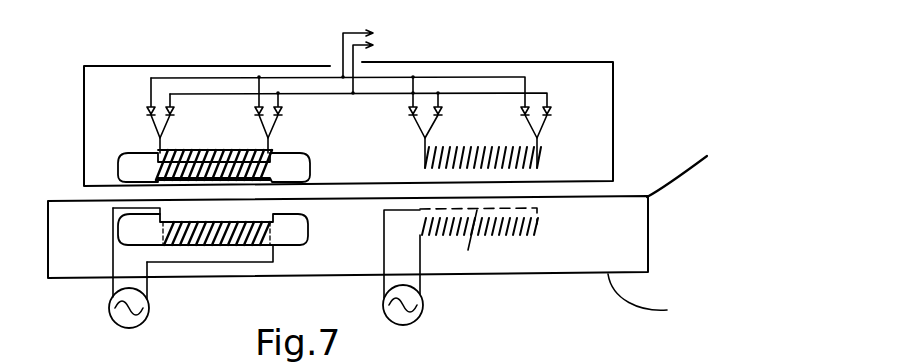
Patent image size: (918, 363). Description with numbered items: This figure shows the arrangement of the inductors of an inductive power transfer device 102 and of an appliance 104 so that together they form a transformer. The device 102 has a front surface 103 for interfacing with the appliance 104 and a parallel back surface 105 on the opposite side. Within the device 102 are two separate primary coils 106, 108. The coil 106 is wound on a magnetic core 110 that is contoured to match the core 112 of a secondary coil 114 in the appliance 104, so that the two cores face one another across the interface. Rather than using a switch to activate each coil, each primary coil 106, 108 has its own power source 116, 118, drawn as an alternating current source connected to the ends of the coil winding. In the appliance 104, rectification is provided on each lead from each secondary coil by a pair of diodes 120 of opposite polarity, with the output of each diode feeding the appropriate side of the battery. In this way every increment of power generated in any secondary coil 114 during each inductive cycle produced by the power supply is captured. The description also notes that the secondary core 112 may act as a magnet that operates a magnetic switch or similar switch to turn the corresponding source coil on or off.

The inductive power transfer device 102 is at (643, 232).
The front surface 103 is at (704, 170).
The appliance 104 is at (607, 123).
The back surface 105 is at (728, 298).
The primary coil 106 is at (268, 237).
The primary coil 108 is at (527, 233).
The magnetic core 110 is at (307, 228).
The core 112 is at (297, 164).
The secondary coil 114 is at (222, 150).
The power source 116 is at (149, 307).
The power source 118 is at (423, 306).
The pair of diodes 120 is at (170, 110).